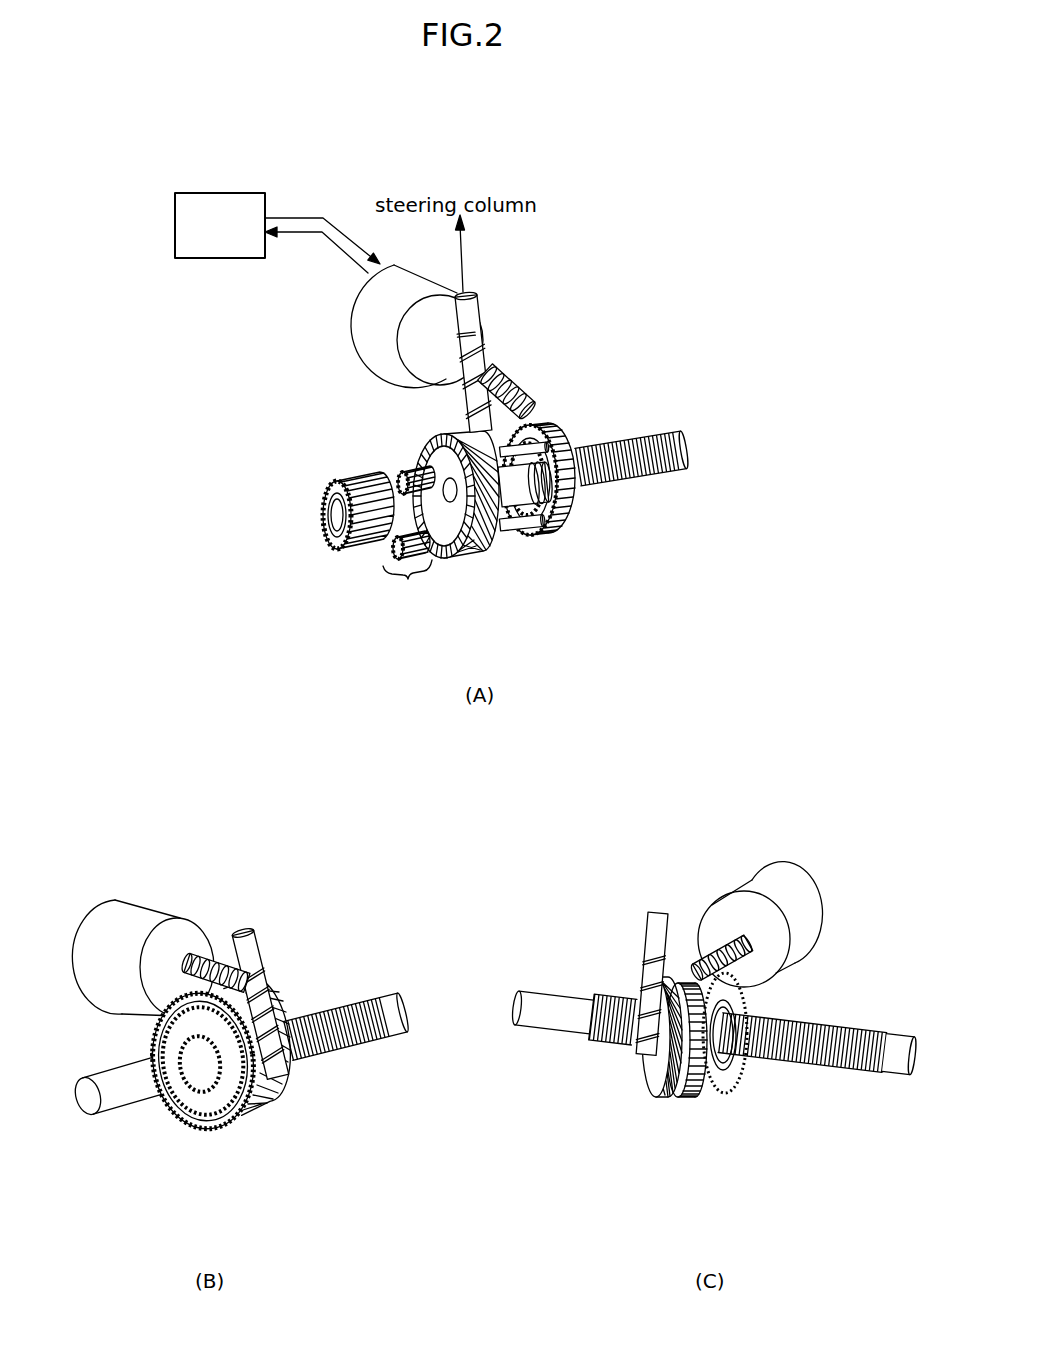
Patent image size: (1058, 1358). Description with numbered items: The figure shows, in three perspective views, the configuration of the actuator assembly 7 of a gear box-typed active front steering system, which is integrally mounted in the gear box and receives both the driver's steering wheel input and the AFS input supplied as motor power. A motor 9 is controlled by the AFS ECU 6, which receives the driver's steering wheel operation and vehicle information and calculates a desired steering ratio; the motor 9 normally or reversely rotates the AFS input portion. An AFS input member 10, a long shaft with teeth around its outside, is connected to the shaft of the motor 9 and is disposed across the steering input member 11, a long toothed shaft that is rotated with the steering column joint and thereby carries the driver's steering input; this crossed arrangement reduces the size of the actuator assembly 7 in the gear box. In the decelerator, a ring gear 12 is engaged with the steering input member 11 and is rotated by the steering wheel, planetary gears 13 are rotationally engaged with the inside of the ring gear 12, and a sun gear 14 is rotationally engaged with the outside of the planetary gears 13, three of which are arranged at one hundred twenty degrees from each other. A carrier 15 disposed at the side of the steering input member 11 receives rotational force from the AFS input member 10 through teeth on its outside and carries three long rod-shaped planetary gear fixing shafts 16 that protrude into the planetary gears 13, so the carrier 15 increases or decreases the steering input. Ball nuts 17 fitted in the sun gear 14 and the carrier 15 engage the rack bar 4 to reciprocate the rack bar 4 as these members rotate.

The rack bar 4 is at (688, 448).
The AFS ECU 6 is at (222, 258).
The actuator assembly 7 is at (606, 299).
The motor 9 is at (373, 333).
The AFS input member 10 is at (512, 378).
The steering input member 11 is at (478, 336).
The ring gear 12 is at (485, 552).
The planetary gears 13 is at (232, 1190).
The sun gear 14 is at (340, 549).
The carrier 15 is at (563, 534).
The planetary gear fixing shafts 16 is at (513, 530).
The ball nut 17 is at (335, 516).